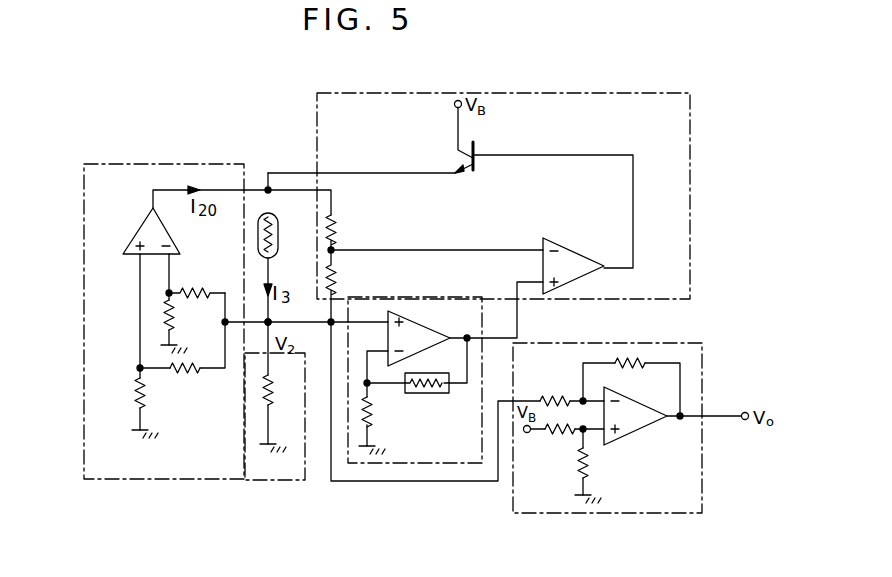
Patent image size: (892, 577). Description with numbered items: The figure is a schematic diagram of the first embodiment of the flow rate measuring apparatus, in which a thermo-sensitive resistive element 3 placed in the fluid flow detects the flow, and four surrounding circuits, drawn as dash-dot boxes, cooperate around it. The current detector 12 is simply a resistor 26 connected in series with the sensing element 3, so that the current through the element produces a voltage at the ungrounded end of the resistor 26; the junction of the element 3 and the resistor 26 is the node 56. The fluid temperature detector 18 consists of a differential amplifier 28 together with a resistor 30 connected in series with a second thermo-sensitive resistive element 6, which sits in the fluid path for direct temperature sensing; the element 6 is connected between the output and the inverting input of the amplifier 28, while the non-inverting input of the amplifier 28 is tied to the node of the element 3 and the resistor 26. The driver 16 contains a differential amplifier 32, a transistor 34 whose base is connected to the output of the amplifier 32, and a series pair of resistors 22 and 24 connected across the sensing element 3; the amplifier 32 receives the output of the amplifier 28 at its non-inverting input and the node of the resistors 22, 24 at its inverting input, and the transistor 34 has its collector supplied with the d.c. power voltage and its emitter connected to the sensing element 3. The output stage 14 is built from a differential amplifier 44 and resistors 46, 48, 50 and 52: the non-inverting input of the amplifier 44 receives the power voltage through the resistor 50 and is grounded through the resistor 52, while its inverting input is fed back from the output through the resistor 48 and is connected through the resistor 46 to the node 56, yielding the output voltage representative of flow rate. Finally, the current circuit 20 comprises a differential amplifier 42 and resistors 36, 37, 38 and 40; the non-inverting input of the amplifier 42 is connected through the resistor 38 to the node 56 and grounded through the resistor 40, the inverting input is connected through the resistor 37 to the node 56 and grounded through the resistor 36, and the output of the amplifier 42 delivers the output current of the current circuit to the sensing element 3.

The thermo-sensitive resistive element 3 is at (279, 231).
The thermo-sensitive resistive element 6 is at (432, 393).
The current detector 12 is at (265, 482).
The output circuit 14 is at (702, 487).
The driver 16 is at (690, 140).
The fluid temperature detector 18 is at (437, 465).
The current circuit 20 is at (167, 163).
The resistor 22 is at (337, 228).
The resistor 24 is at (337, 276).
The resistor 26 is at (275, 388).
The differential amplifier 28 is at (423, 323).
The resistor 30 is at (373, 410).
The differential amplifier 32 is at (575, 250).
The transistor 34 is at (478, 149).
The resistor 36 is at (176, 318).
The resistor 37 is at (198, 290).
The resistor 38 is at (189, 378).
The resistor 40 is at (133, 400).
The differential amplifier 42 is at (136, 232).
The differential amplifier 44 is at (640, 430).
The resistor 46 is at (561, 396).
The resistor 48 is at (622, 357).
The resistor 50 is at (552, 436).
The resistor 52 is at (591, 467).
The node 56 is at (271, 320).